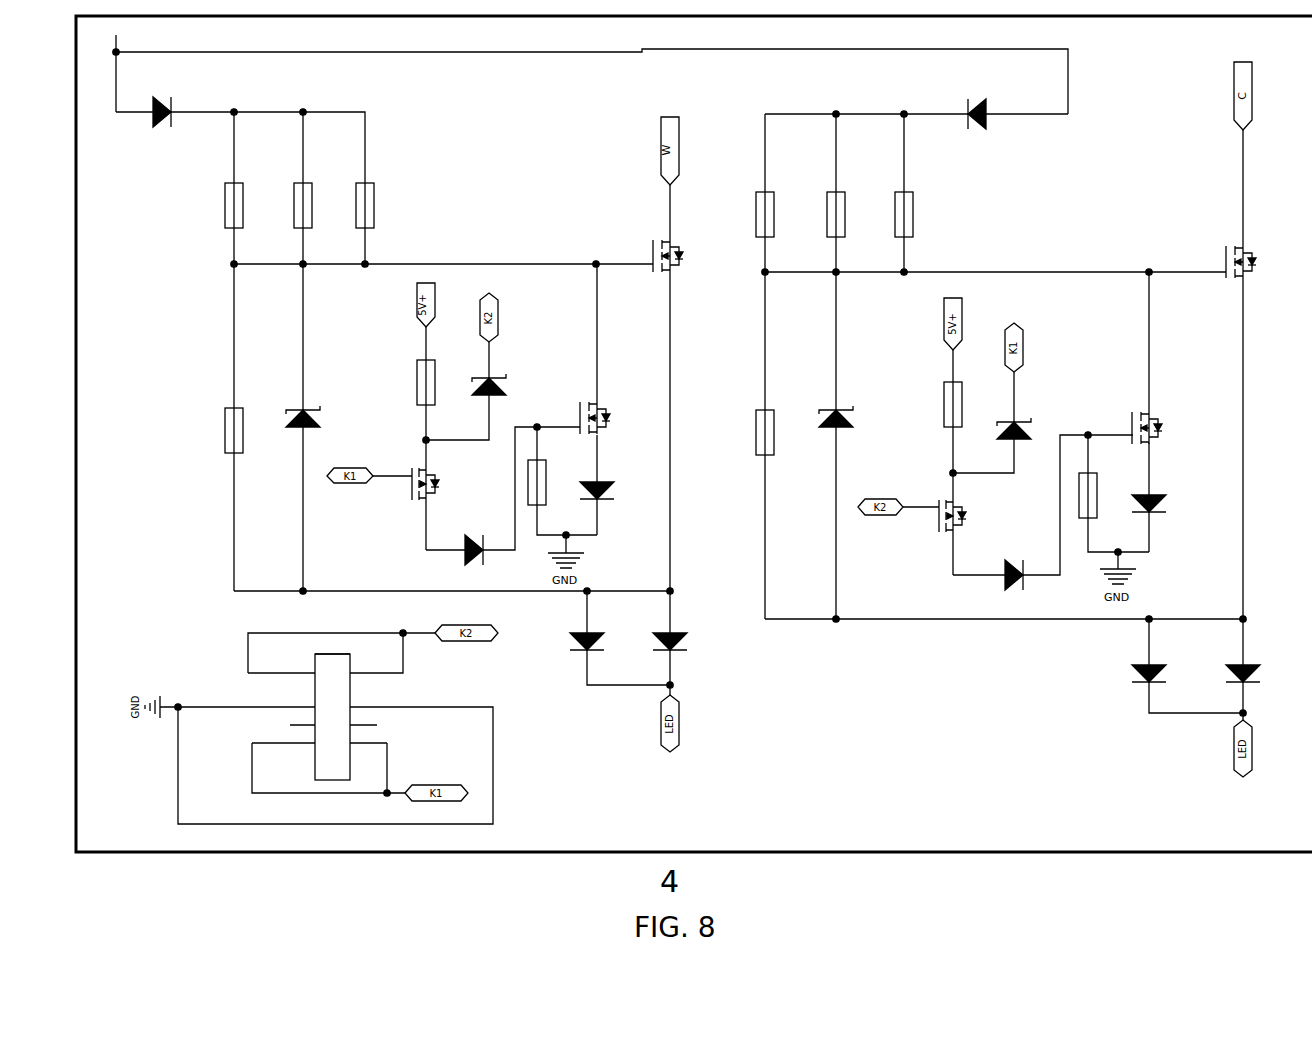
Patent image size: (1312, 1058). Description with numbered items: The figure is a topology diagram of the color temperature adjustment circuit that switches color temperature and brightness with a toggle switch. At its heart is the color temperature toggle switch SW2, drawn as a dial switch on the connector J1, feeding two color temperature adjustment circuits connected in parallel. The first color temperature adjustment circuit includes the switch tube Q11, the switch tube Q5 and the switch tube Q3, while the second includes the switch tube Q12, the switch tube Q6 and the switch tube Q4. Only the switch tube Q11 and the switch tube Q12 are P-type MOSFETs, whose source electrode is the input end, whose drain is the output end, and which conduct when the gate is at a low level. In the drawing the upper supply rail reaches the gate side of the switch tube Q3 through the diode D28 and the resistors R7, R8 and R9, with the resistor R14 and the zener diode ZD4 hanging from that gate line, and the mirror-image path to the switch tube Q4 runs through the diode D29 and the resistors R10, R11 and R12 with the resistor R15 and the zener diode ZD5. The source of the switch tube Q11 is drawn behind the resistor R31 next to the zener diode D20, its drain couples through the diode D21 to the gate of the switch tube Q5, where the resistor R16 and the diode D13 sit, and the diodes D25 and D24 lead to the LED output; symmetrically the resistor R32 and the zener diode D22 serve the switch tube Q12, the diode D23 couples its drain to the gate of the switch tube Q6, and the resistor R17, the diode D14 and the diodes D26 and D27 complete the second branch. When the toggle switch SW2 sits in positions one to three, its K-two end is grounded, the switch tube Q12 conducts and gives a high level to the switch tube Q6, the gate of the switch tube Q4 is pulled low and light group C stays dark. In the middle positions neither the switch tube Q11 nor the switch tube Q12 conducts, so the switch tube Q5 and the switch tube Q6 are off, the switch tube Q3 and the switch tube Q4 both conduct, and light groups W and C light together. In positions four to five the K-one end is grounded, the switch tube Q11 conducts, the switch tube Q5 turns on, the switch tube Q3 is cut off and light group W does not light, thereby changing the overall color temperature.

The diode ES2J D28 is at (161, 110).
The resistor 100K R7 is at (248, 205).
The resistor 100K R8 is at (317, 205).
The resistor 100K R9 is at (379, 205).
The resistor NC R14 is at (244, 431).
The zener diode 9.1V ZD4 is at (318, 420).
The switch tube Q3 is at (675, 260).
The resistor 10K R31 is at (436, 384).
The zener diode 3.3V D20 is at (504, 386).
The switch tube Q11 is at (442, 486).
The diode 4148 D21 is at (473, 549).
The resistor 100K R16 is at (551, 483).
The switch tube Q5 is at (604, 422).
The diode ES1J D13 is at (611, 492).
The diode ES2J D25 is at (601, 643).
The diode ES2J D24 is at (684, 643).
The color temperature toggle switch SW2 is at (329, 717).
The connector J1 is at (346, 662).
The diode ES2J D29 is at (975, 112).
The resistor 100K R10 is at (779, 213).
The resistor 100K R11 is at (850, 213).
The resistor 100K R12 is at (918, 213).
The resistor NC R15 is at (775, 432).
The zener diode 9.1V ZD5 is at (851, 420).
The switch tube Q4 is at (1248, 266).
The resistor 10K R32 is at (963, 405).
The zener diode 3.3V D22 is at (1029, 430).
The switch tube Q12 is at (969, 518).
The diode 4148 D23 is at (1013, 574).
The resistor 100K R17 is at (1102, 495).
The switch tube Q6 is at (1156, 431).
The diode ES1J D14 is at (1163, 505).
The diode ES2J D26 is at (1163, 675).
The diode ES2J D27 is at (1257, 675).